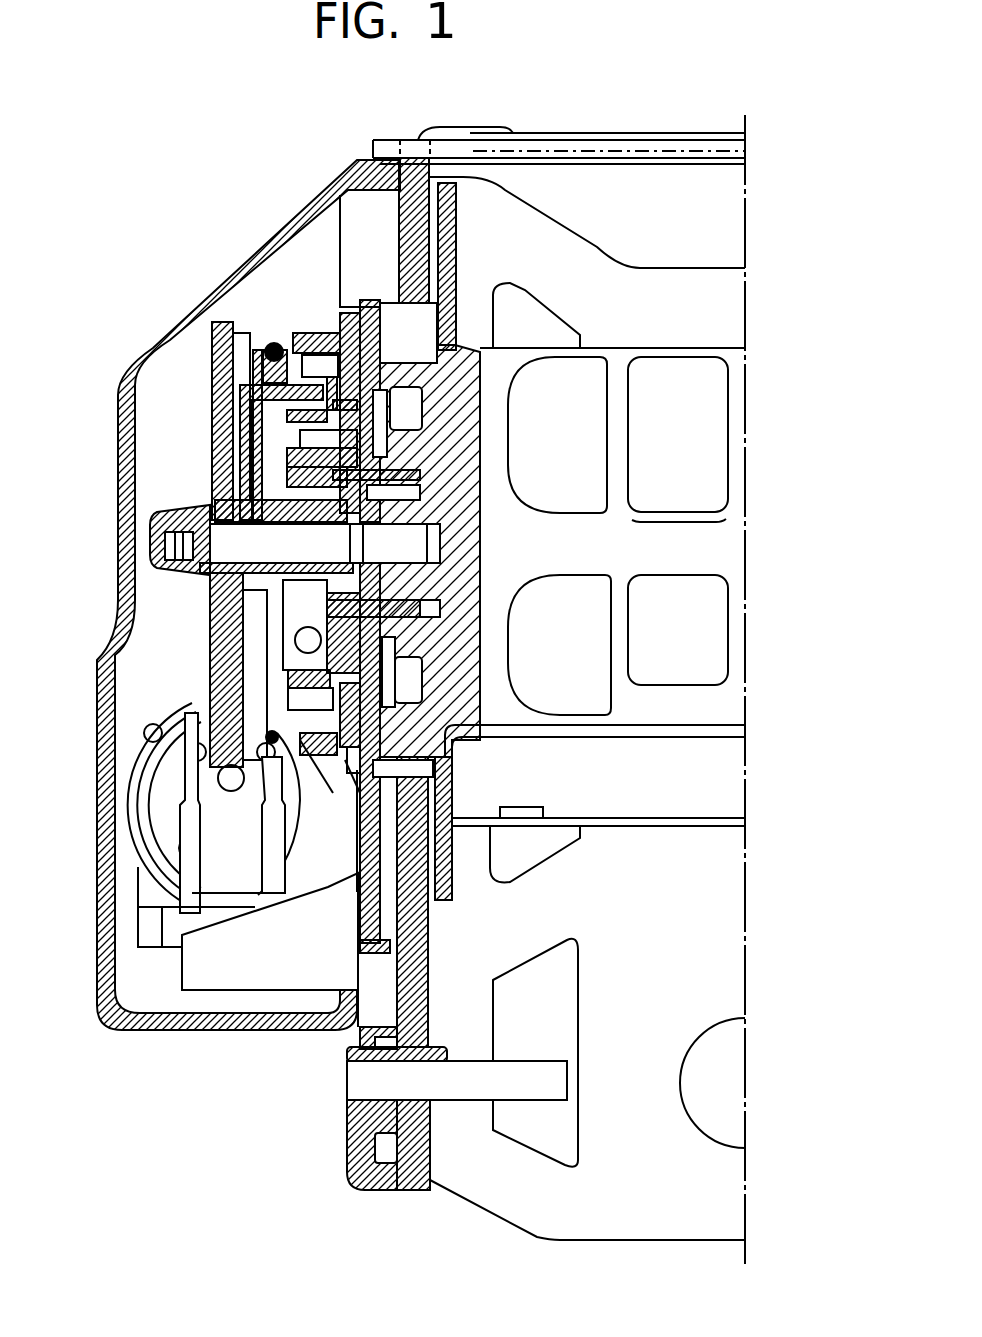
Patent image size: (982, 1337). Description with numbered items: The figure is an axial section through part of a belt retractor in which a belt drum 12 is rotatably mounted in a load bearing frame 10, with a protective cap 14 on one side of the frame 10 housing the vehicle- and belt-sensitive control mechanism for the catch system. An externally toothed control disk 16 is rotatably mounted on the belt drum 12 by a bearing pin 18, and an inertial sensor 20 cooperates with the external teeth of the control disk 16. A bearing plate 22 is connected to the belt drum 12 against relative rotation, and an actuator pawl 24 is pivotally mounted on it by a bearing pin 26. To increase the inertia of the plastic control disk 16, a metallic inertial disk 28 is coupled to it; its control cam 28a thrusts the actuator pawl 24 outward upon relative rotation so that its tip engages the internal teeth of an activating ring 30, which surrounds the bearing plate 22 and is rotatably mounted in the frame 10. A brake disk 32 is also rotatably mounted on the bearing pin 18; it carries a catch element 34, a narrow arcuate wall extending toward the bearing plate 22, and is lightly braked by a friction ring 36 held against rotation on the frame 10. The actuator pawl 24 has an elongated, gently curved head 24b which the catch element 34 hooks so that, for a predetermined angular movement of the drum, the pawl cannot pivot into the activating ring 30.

The load bearing frame 10 is at (397, 993).
The belt drum 12 is at (627, 707).
The protective cap 14 is at (190, 300).
The control disk 16 is at (232, 373).
The bearing pin 18 is at (218, 540).
The inertial sensor 20 is at (206, 825).
The bearing plate 22 is at (333, 628).
The actuator pawl 24 is at (305, 478).
The elongated head 24b is at (268, 737).
The bearing pin 26 is at (300, 437).
The inertial disk 28 is at (310, 693).
The control cam 28a is at (295, 378).
The activating ring 30 is at (215, 768).
The brake disk 32 is at (310, 727).
The catch element 34 is at (312, 662).
The friction ring 36 is at (268, 350).